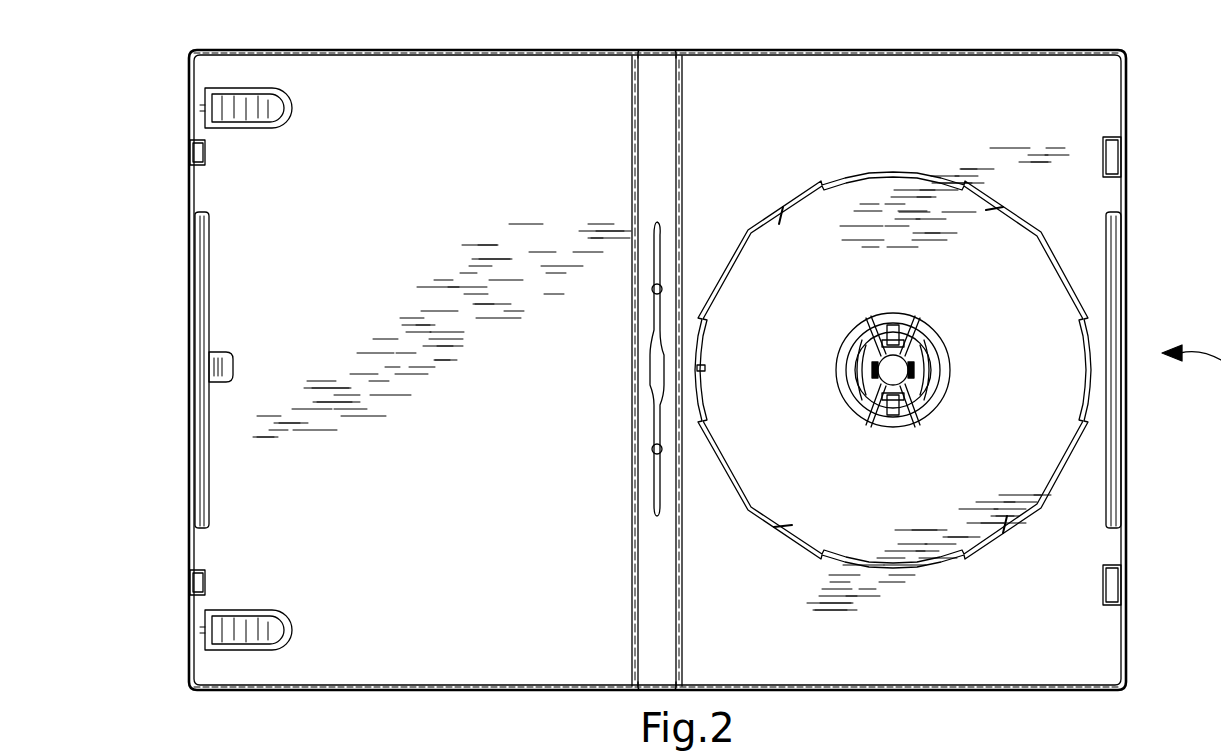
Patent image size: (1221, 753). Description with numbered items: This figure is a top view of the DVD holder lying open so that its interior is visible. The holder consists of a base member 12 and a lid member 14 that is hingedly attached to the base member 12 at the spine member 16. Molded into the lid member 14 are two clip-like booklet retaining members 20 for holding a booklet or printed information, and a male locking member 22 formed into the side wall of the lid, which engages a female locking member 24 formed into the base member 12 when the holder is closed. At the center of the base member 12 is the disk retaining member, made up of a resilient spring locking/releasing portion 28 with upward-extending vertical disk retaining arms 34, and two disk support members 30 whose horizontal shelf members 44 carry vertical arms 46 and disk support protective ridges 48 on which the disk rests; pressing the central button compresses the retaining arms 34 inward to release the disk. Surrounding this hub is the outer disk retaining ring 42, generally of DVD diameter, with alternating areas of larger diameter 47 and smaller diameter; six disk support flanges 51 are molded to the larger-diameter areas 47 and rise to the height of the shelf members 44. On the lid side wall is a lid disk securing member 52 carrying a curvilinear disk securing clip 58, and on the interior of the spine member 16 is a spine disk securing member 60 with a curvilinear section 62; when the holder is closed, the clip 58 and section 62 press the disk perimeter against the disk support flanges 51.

The base member 12 is at (1080, 80).
The lid member 14 is at (512, 118).
The spine member 16 is at (658, 115).
The booklet retaining members 20 is at (296, 108).
The male locking member 22 is at (205, 160).
The female locking member 24 is at (1112, 157).
The spring locking/releasing portion 28 is at (888, 428).
The disk support members 30 is at (935, 400).
The vertical disk retaining arms 34 is at (897, 318).
The outer disk retaining ring 42 is at (888, 148).
The horizontal shelf members 44 is at (925, 342).
The vertical arms 46 is at (925, 377).
The areas of larger diameter 47 is at (703, 332).
The disk support protective ridges 48 is at (910, 372).
The disk support flanges 51 is at (705, 366).
The lid disk securing member 52 is at (209, 478).
The disk securing clip 58 is at (235, 368).
The spine disk securing member 60 is at (656, 458).
The curvilinear section 62 is at (660, 378).